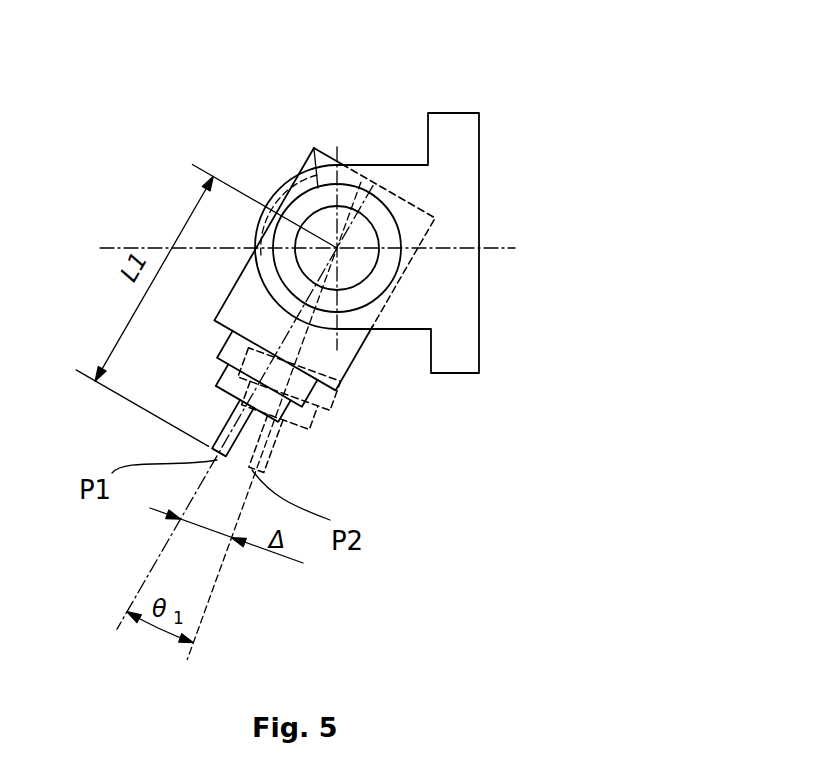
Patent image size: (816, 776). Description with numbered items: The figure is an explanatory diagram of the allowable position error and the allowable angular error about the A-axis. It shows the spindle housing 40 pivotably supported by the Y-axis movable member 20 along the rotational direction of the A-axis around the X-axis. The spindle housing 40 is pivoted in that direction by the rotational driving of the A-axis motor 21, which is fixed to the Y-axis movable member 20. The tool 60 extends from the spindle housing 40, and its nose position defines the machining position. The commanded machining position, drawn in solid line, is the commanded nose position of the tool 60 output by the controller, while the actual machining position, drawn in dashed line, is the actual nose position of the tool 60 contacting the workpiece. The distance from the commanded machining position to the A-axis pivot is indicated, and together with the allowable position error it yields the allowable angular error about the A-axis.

The Y-axis movable member 20 is at (450, 113).
The A-axis motor 21 is at (303, 165).
The spindle housing 40 is at (352, 367).
The tool 60 is at (228, 423).